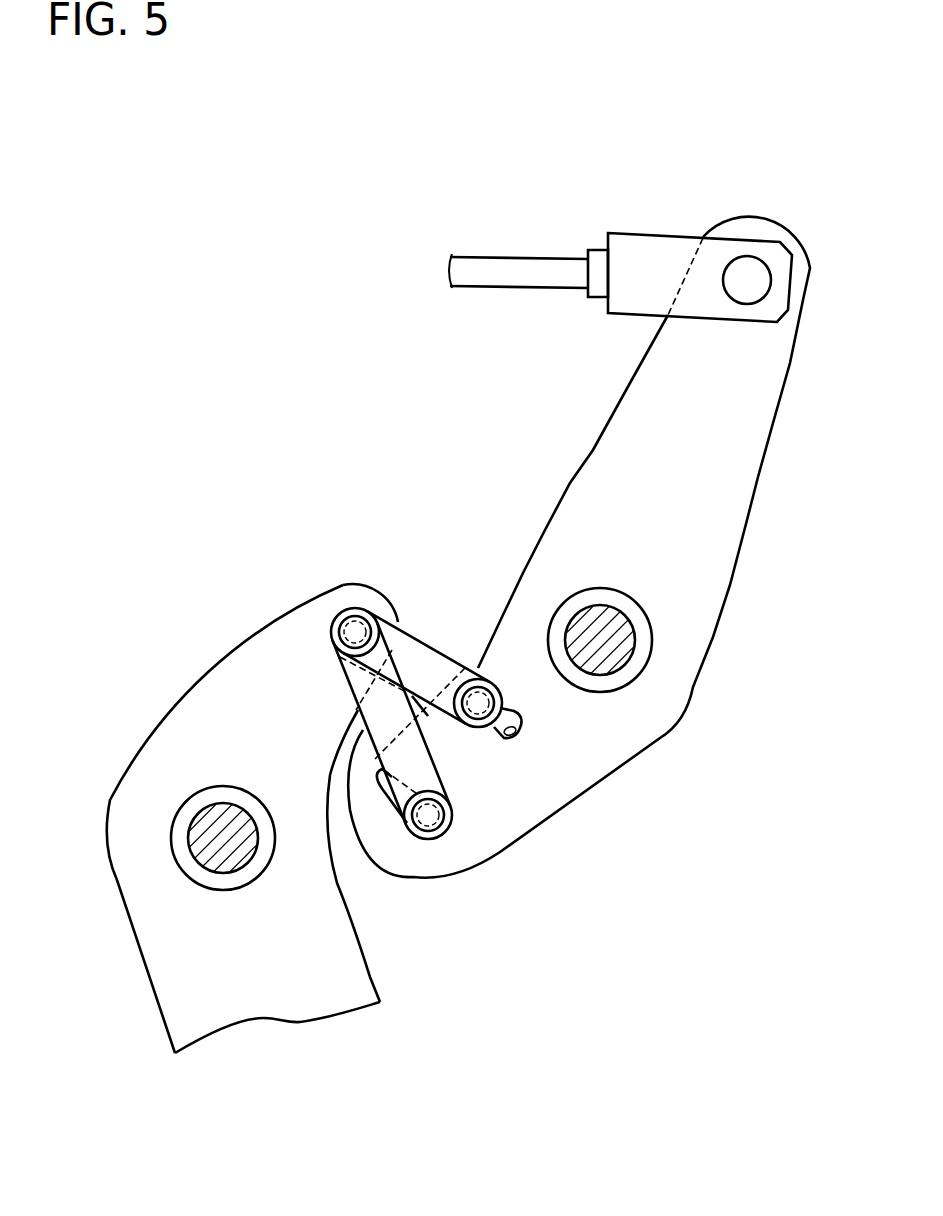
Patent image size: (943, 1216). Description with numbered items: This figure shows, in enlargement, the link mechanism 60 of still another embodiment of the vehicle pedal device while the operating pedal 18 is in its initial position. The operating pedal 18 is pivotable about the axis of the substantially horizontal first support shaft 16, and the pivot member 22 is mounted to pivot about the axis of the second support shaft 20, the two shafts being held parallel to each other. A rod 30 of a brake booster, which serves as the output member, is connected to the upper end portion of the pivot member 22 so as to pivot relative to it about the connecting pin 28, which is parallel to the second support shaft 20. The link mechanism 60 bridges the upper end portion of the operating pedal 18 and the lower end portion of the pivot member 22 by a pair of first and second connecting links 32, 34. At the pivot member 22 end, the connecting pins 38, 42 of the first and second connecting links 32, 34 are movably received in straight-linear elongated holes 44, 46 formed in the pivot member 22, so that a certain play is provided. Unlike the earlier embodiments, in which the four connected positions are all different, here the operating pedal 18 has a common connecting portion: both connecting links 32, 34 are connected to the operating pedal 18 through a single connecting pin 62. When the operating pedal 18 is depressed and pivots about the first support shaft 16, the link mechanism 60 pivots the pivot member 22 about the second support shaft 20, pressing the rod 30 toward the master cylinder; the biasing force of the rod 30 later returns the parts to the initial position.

The first support shaft 16 is at (208, 830).
The operating pedal 18 is at (307, 1003).
The second support shaft 20 is at (618, 653).
The pivot member 22 is at (710, 583).
The connecting pin 28 is at (747, 270).
The rod 30 is at (510, 267).
The first connecting link 32 is at (347, 677).
The second connecting link 34 is at (413, 650).
The connecting pin 38 is at (436, 818).
The connecting pin 42 is at (478, 700).
The elongated hole 44 is at (372, 800).
The elongated hole 46 is at (503, 736).
The link mechanism 60 is at (386, 550).
The single connecting pin 62 is at (354, 628).